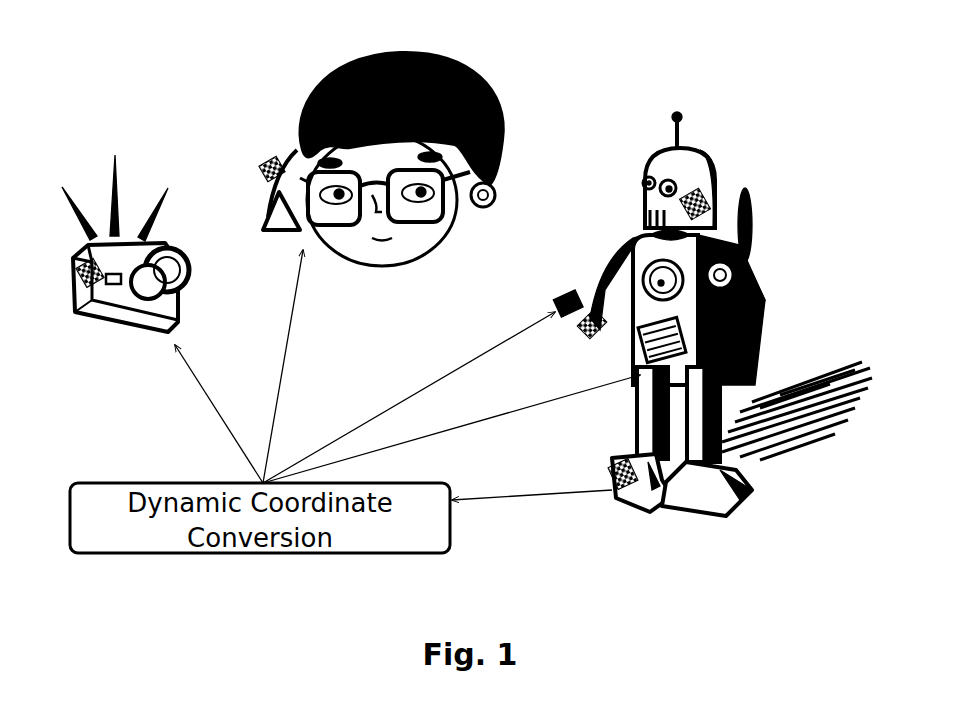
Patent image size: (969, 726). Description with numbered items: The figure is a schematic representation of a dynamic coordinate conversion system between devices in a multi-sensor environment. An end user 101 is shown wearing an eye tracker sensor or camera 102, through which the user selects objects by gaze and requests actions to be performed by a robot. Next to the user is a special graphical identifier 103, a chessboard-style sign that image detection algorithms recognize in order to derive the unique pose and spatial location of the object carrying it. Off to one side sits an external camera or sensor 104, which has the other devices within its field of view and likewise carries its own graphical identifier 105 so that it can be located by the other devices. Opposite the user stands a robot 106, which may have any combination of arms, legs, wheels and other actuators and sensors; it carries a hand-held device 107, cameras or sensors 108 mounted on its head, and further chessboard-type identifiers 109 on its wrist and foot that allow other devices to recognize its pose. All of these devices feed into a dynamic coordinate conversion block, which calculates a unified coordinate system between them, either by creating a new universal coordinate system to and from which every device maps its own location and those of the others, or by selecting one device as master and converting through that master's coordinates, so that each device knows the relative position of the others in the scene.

The end user 101 is at (493, 90).
The eye tracker sensor or camera 102 is at (280, 234).
The special graphical identifier 103 is at (256, 175).
The external camera or sensor 104 is at (85, 170).
The robot 105 is at (72, 287).
The cameras or sensors mounted on robot 106 is at (697, 138).
The controller held by robot 107 is at (562, 293).
The robot camera eye 108 is at (647, 181).
The marker on robot 109 is at (742, 356).